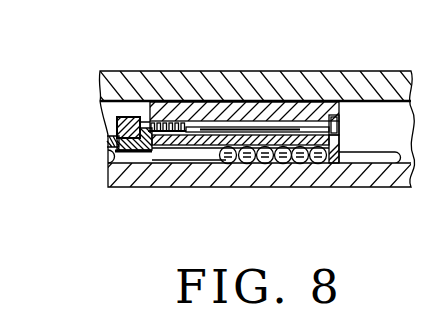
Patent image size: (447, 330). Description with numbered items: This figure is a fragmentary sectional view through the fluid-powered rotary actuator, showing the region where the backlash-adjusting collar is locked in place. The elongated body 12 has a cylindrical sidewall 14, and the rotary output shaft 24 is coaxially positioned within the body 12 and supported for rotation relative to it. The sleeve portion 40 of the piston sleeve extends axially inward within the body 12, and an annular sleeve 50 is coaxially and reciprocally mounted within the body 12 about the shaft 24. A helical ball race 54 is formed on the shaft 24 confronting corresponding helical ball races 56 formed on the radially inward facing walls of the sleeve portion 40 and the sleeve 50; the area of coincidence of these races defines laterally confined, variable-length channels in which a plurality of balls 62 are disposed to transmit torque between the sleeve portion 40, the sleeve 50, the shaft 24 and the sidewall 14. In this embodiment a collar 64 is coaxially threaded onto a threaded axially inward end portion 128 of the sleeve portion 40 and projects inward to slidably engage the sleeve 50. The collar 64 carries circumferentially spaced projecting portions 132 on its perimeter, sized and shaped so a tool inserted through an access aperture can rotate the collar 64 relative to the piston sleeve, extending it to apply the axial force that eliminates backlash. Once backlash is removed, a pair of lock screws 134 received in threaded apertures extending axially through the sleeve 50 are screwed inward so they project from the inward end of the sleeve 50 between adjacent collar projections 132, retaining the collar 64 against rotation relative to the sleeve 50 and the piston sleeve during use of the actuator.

The body 12 is at (163, 70).
The cylindrical sidewall 14 is at (212, 82).
The rotary output shaft 24 is at (296, 177).
The sleeve portion 40 is at (107, 143).
The annular sleeve 50 is at (309, 97).
The helical ball race 54 is at (167, 164).
The helical ball races 56 is at (197, 143).
The balls 62 is at (264, 159).
The collar 64 is at (143, 143).
The threaded axially inward end portion 128 is at (115, 128).
The projecting portions 132 is at (147, 126).
The lock screws 134 is at (267, 127).